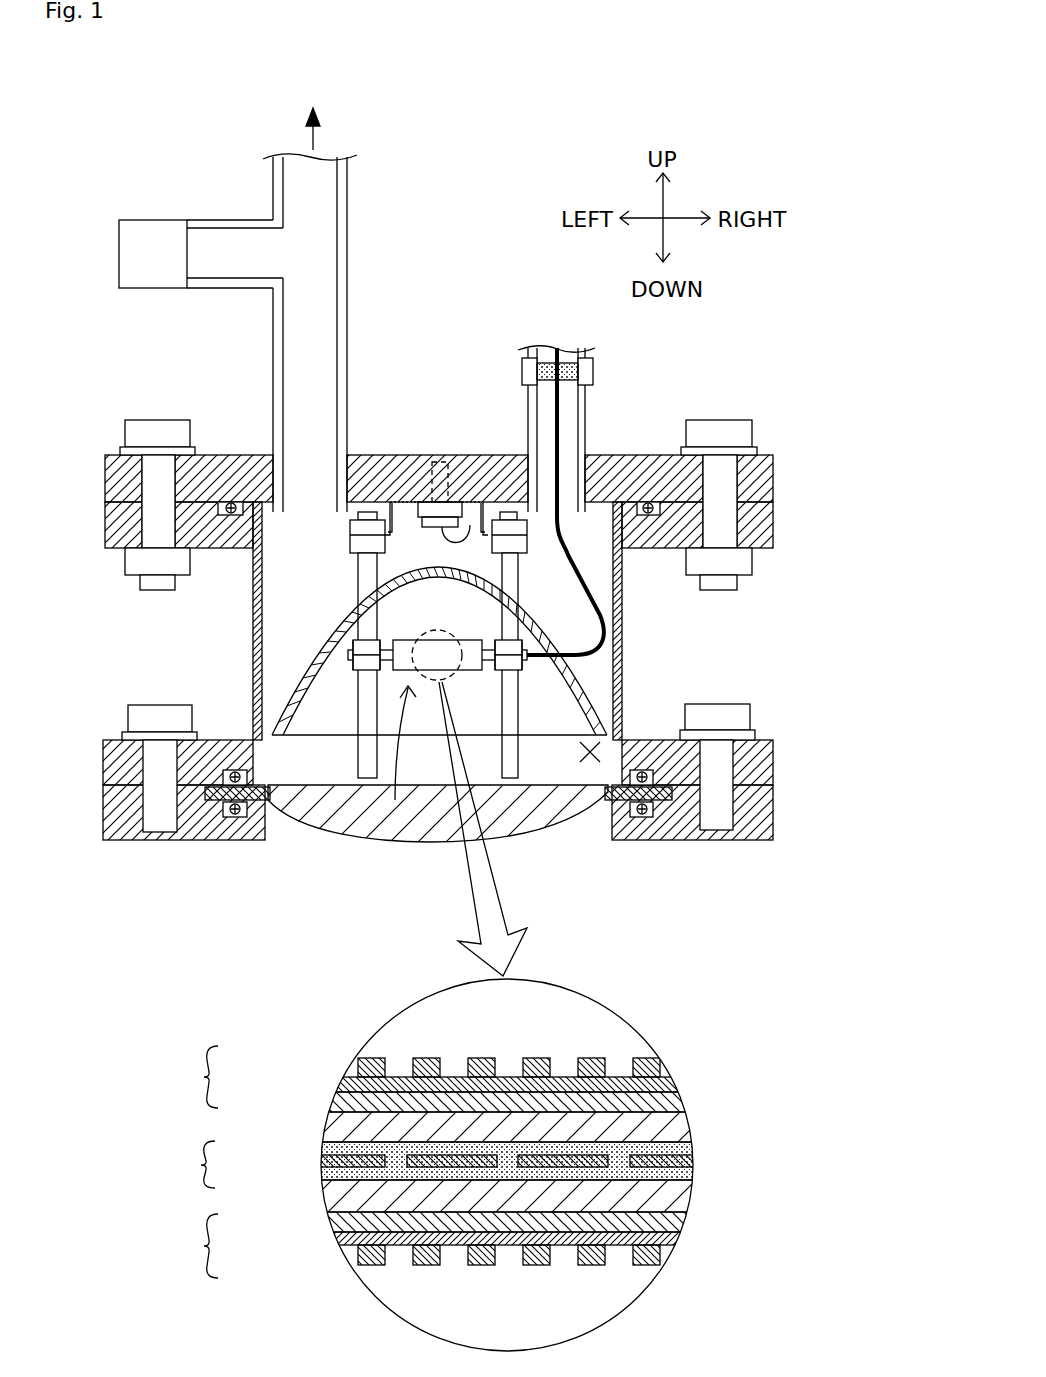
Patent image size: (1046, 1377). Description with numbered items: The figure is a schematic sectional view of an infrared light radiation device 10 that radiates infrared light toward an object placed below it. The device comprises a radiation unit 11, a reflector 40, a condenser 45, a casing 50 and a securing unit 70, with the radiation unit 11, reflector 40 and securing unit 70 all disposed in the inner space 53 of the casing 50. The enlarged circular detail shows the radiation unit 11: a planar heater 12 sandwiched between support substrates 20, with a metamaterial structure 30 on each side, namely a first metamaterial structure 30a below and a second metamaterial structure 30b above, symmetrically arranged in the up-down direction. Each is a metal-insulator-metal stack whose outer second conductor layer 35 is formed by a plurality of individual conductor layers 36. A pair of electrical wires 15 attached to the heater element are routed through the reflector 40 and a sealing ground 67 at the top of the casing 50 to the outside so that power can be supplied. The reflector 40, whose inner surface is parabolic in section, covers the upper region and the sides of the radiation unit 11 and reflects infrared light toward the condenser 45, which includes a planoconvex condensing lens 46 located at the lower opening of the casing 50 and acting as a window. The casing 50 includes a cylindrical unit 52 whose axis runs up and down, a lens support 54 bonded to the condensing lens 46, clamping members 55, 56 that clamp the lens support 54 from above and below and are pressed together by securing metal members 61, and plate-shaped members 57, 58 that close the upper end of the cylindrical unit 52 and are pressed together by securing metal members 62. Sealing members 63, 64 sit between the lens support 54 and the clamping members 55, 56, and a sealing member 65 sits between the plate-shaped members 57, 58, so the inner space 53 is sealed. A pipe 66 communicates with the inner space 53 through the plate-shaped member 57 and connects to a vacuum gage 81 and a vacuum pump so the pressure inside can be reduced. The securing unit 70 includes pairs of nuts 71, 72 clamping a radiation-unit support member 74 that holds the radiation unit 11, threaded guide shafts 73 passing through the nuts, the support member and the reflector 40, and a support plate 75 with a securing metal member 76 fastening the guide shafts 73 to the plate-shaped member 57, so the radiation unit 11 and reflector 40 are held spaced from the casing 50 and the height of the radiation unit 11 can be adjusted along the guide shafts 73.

The infrared light radiation device 10 is at (809, 300).
The radiation unit 11 is at (440, 682).
The heater 12 is at (188, 1164).
The electrical wires 15 is at (527, 647).
The support substrates 20 is at (159, 1106).
The metamaterial structure 30 is at (159, 1056).
The first metamaterial structure 30a is at (188, 1246).
The second metamaterial structure 30b is at (188, 1077).
The second conductor layer 35 is at (329, 1064).
The individual conductor layers 36 is at (378, 1068).
The reflector 40 is at (290, 700).
The condenser 45 is at (586, 890).
The condensing lens 46 is at (535, 838).
The casing 50 is at (695, 383).
The cylindrical unit 52 is at (632, 697).
The inner space 53 is at (598, 742).
The lens support 54 is at (252, 802).
The clamping member 55 is at (773, 758).
The clamping member 56 is at (773, 808).
The plate-shaped member 57 is at (773, 478).
The plate-shaped member 58 is at (773, 540).
The securing metal members 61 is at (155, 705).
The securing metal members 62 is at (157, 420).
The sealing member 63 is at (235, 770).
The sealing member 64 is at (235, 817).
The sealing member 65 is at (232, 502).
The pipe 66 is at (347, 322).
The sealing ground 67 is at (522, 372).
The securing unit 70 is at (281, 582).
The nuts 71 is at (357, 640).
The nuts 72 is at (355, 667).
The guide shafts 73 is at (358, 587).
The radiation-unit support member 74 is at (348, 653).
The support plate 75 is at (383, 520).
The securing metal member 76 is at (470, 520).
The vacuum gage 81 is at (119, 252).